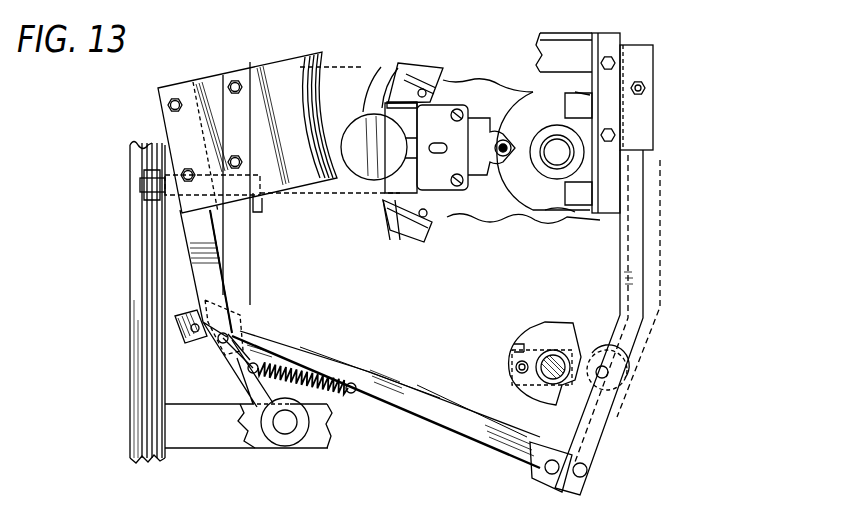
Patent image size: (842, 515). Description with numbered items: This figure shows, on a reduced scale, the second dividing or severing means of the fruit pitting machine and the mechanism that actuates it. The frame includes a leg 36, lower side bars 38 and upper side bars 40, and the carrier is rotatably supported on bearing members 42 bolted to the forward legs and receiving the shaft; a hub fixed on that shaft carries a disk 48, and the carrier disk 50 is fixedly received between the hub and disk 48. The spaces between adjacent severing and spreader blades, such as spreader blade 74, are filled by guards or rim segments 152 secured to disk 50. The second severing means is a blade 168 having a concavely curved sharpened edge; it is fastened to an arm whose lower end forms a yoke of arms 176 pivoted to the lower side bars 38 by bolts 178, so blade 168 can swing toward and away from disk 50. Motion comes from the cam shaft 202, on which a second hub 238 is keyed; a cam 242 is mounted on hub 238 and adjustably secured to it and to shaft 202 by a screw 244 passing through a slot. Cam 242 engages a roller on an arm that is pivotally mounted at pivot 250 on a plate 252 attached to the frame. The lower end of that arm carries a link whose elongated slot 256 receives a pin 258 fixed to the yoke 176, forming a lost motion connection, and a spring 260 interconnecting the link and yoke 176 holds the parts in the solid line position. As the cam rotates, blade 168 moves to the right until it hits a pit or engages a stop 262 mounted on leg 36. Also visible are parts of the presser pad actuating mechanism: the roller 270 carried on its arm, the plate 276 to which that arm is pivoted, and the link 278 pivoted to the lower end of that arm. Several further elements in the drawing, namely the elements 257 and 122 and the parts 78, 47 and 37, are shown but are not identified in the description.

The leg 36 is at (132, 437).
The lower side bar 38 is at (211, 442).
The bolt 178 is at (288, 428).
The yoke arms 176 is at (208, 283).
The elongated slot 256 is at (201, 342).
The pin 258 is at (240, 336).
The spring 260 is at (320, 375).
The link bar 257 is at (440, 432).
The link 278 is at (637, 287).
The plate 276 is at (615, 382).
The cam 242 is at (548, 335).
The second hub 238 is at (540, 355).
The cam shaft 202 is at (560, 356).
The roller 270 is at (514, 349).
The screw 244 is at (518, 370).
The blade 168 is at (276, 92).
The stop 262 is at (268, 205).
The spreader blade 74 is at (437, 185).
The guard 152 is at (420, 68).
The disk 50 is at (472, 92).
The actuator arm 122 is at (478, 172).
The disk 48 is at (523, 217).
The clamp block 78 is at (578, 149).
The hub 47 is at (557, 152).
The bearing member 42 is at (565, 200).
The mounting plate 37 is at (605, 38).
The upper side bar 40 is at (548, 42).
The plate 252 is at (638, 125).
The pivot 250 is at (649, 89).